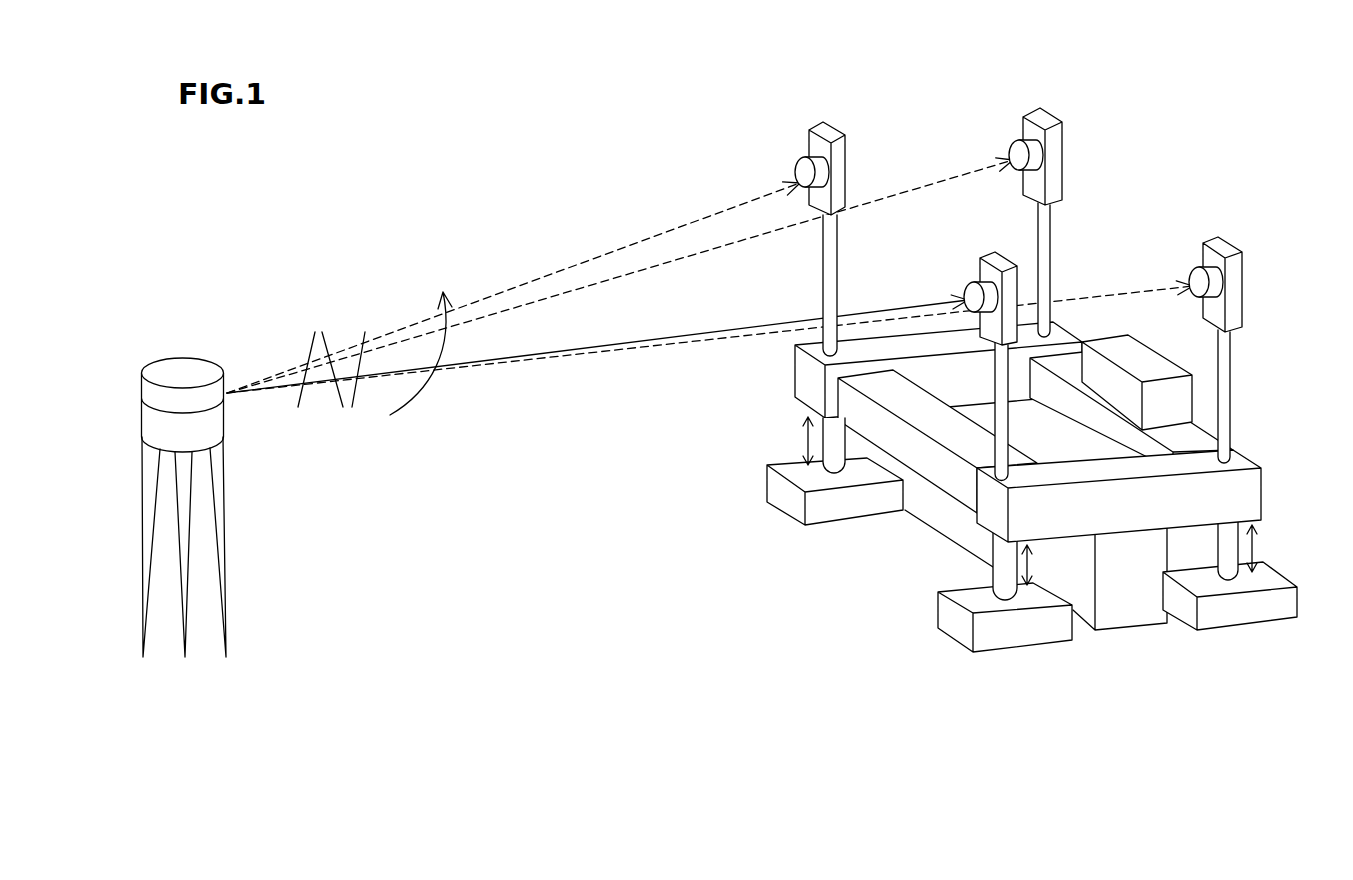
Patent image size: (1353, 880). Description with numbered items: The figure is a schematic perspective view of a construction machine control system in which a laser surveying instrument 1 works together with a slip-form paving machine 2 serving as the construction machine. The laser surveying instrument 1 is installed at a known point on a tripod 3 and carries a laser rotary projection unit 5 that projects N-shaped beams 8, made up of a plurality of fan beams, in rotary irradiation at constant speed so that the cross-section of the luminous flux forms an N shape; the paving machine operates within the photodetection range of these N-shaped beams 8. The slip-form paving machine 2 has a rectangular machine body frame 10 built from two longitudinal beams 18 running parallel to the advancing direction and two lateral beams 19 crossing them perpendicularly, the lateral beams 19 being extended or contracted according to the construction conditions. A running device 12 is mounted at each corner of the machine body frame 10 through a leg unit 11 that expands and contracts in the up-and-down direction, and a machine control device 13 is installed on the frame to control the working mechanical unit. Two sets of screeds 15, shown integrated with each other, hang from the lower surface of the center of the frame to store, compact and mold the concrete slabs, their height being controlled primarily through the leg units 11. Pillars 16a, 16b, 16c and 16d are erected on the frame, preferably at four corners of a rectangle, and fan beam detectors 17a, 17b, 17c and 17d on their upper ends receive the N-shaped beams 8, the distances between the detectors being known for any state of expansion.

The laser surveying instrument 1 is at (216, 343).
The slip-form paving machine 2 is at (988, 400).
The tripod 3 is at (227, 498).
The laser rotary projection unit 5 is at (186, 358).
The N-shaped beams 8 is at (606, 250).
The machine body frame 10 is at (1272, 452).
The leg unit 11 is at (1262, 545).
The running device 12 is at (1240, 628).
The machine control device 13 is at (1155, 353).
The screeds 15 is at (1130, 632).
The pillar 16a is at (993, 376).
The pillar 16b is at (840, 250).
The pillar 16c is at (1233, 370).
The pillar 16d is at (1055, 237).
The fan beam detector 17a is at (995, 253).
The fan beam detector 17b is at (842, 136).
The fan beam detector 17c is at (1242, 265).
The fan beam detector 17d is at (1047, 112).
The longitudinal beams 18 is at (917, 345).
The lateral beams 19 is at (860, 403).